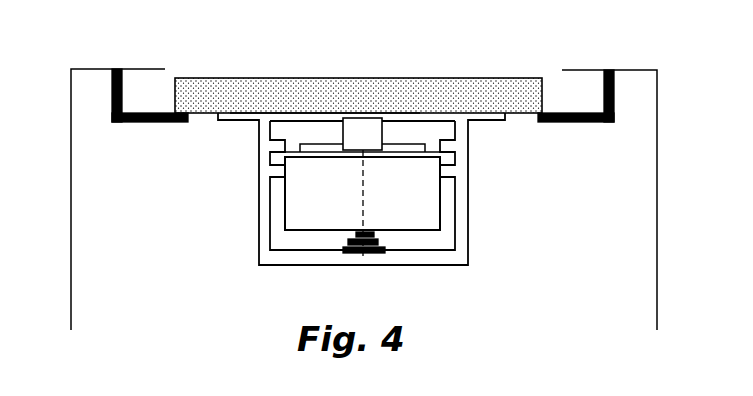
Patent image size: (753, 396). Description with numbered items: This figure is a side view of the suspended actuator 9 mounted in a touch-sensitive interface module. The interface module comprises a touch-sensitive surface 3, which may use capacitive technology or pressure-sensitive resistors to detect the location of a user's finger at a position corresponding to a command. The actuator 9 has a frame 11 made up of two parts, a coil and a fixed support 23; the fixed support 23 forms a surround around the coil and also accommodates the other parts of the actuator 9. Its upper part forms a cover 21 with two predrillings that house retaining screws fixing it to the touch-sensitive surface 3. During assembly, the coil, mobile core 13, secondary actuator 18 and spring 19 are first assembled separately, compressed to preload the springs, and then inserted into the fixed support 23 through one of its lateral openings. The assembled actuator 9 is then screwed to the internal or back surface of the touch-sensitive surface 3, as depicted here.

The touch-sensitive surface 3 is at (358, 95).
The suspended actuator 9 is at (217, 118).
The frame 11 is at (462, 204).
The mobile core 13 is at (446, 188).
The secondary actuator 18 is at (386, 132).
The spring 19 is at (398, 245).
The cover 21 is at (312, 103).
The fixed support 23 is at (470, 141).